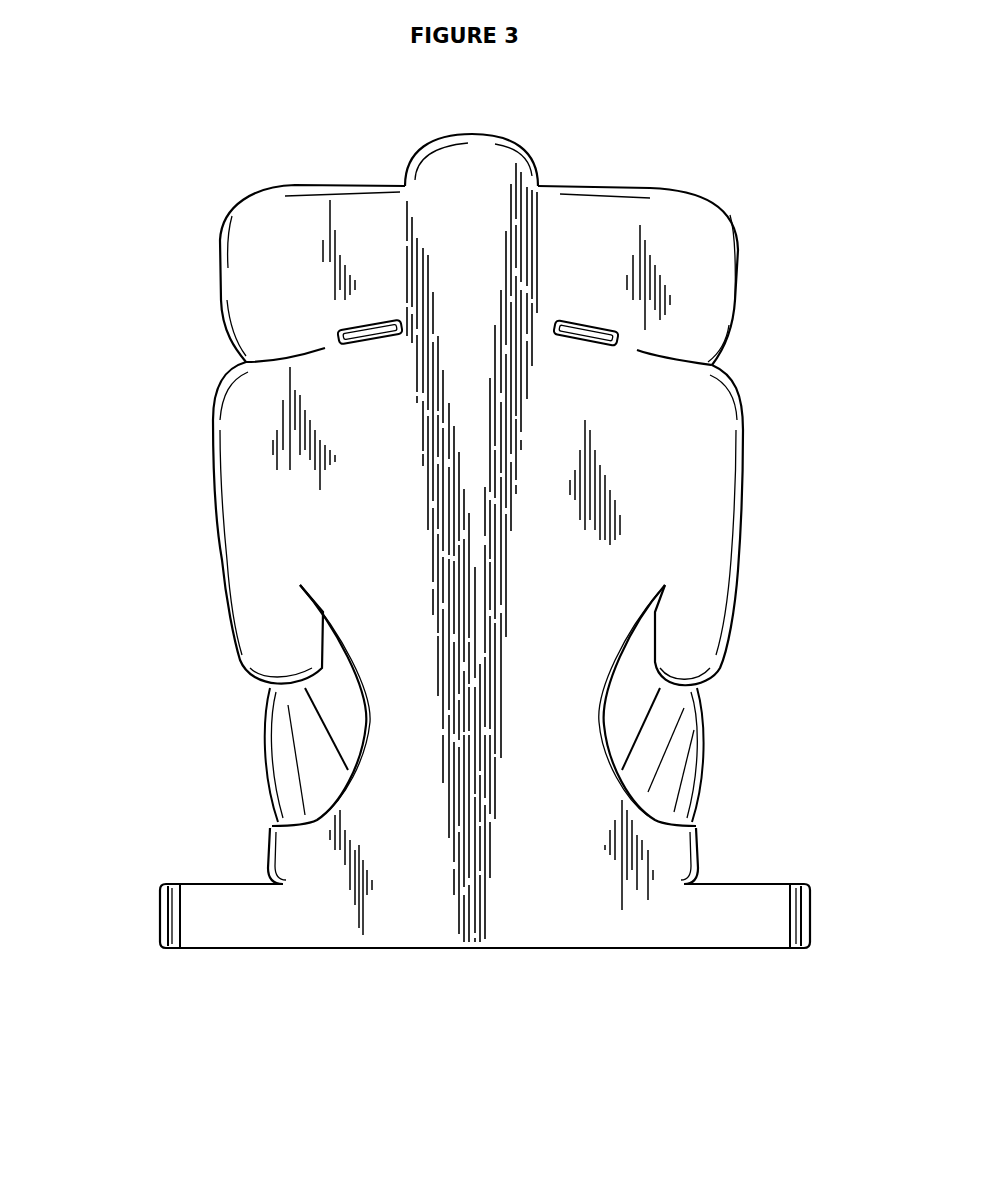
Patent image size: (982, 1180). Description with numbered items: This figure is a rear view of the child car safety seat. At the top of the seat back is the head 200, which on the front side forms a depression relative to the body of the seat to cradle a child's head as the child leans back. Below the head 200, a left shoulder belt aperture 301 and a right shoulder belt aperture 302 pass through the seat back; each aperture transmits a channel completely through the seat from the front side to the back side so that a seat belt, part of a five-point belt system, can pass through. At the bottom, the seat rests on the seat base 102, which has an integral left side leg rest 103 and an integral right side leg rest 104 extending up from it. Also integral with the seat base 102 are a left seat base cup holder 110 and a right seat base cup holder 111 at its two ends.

The head 200 is at (500, 134).
The left shoulder belt aperture 301 is at (340, 338).
The right shoulder belt aperture 302 is at (628, 334).
The left side leg rest 103 is at (290, 752).
The right side leg rest 104 is at (665, 738).
The seat base 102 is at (680, 935).
The left seat base cup holder 110 is at (160, 922).
The right seat base cup holder 111 is at (810, 942).